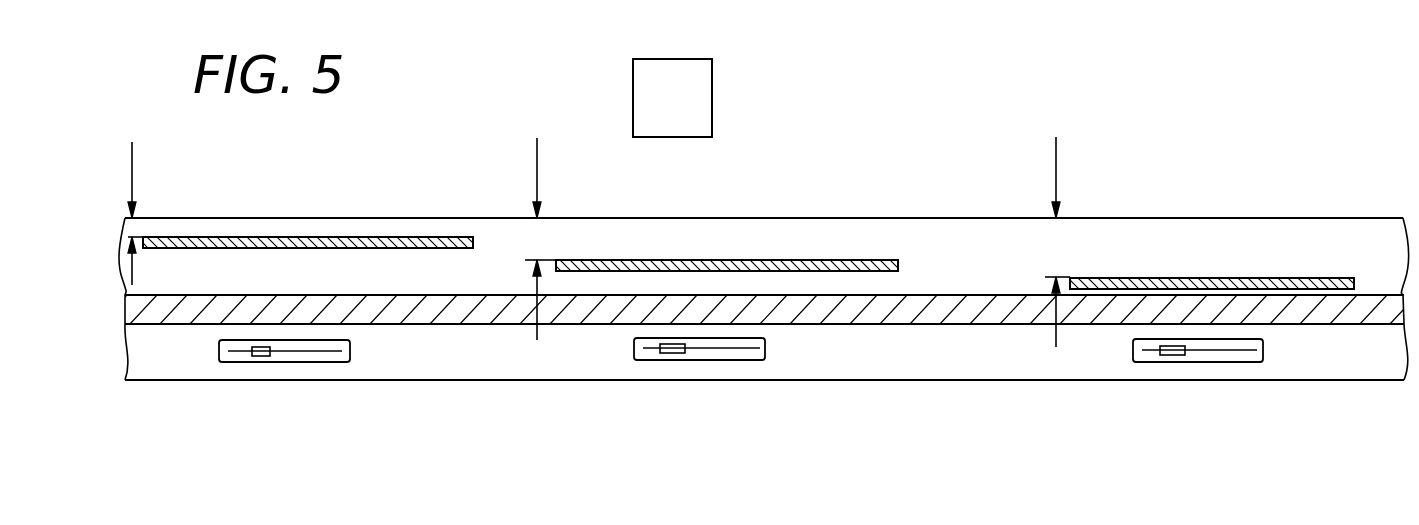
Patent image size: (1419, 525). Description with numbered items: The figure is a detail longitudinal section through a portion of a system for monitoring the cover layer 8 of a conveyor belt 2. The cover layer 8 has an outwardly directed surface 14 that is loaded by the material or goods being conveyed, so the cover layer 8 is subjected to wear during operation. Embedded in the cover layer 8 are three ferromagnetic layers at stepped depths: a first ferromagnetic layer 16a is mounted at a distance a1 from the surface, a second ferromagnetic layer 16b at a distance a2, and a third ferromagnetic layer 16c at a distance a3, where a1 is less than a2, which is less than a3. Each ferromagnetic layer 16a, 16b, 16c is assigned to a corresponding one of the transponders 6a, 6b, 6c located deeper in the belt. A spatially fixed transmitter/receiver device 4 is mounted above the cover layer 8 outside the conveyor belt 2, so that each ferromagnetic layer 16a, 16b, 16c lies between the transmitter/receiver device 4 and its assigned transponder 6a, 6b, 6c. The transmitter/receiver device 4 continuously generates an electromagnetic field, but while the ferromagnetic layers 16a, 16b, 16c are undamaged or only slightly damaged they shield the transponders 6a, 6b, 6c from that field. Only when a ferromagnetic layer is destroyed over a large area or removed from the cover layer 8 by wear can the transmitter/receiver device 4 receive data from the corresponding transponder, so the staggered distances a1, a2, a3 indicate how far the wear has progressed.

The conveyor belt 2 is at (1093, 245).
The transmitter/receiver device 4 is at (712, 100).
The transponder 6a is at (298, 362).
The transponder 6b is at (697, 360).
The transponder 6c is at (1198, 362).
The cover layer 8 is at (955, 258).
The surface 14 is at (898, 218).
The first ferromagnetic layer 16a is at (298, 237).
The second ferromagnetic layer 16b is at (717, 262).
The third ferromagnetic layer 16c is at (1200, 283).
The distance a1 is at (110, 213).
The distance a2 is at (534, 239).
The distance a3 is at (1051, 242).